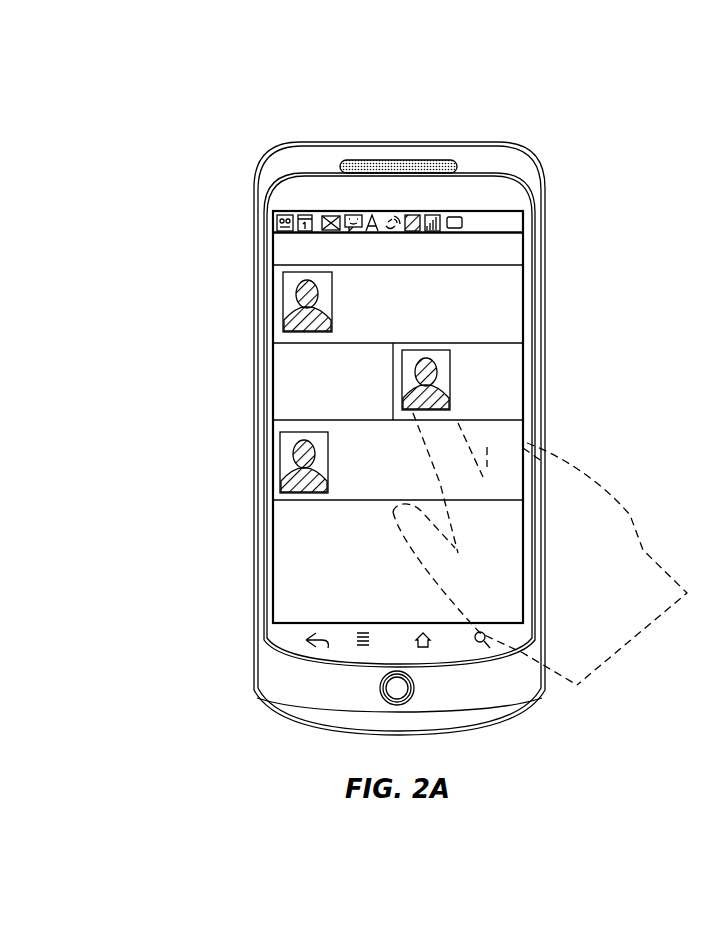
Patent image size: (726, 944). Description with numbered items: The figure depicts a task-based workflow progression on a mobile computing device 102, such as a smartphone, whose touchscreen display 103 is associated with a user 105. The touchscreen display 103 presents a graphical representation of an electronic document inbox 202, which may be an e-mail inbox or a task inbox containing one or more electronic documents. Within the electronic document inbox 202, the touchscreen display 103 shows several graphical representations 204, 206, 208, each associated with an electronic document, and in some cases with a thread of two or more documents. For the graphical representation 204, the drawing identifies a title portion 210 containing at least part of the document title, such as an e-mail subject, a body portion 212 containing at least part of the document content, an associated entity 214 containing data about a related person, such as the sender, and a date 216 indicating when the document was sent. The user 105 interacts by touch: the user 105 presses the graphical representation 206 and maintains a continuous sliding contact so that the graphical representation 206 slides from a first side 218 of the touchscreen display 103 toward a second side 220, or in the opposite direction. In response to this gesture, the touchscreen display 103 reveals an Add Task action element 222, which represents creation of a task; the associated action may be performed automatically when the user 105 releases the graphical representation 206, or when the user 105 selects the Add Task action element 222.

The mobile computing device 102 is at (243, 142).
The touchscreen display 103 is at (351, 591).
The user 105 is at (628, 643).
The electronic document inbox 202 is at (203, 232).
The graphical representation 204 is at (272, 277).
The graphical representation 206 is at (510, 412).
The graphical representation 208 is at (357, 503).
The title portion 210 is at (486, 295).
The body portion 212 is at (479, 315).
The associated entity 214 is at (283, 318).
The date 216 is at (523, 275).
The first side 218 is at (273, 558).
The second side 220 is at (526, 240).
The Add Task action element 222 is at (299, 395).